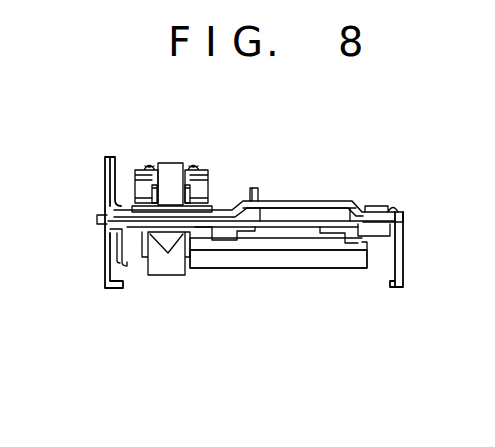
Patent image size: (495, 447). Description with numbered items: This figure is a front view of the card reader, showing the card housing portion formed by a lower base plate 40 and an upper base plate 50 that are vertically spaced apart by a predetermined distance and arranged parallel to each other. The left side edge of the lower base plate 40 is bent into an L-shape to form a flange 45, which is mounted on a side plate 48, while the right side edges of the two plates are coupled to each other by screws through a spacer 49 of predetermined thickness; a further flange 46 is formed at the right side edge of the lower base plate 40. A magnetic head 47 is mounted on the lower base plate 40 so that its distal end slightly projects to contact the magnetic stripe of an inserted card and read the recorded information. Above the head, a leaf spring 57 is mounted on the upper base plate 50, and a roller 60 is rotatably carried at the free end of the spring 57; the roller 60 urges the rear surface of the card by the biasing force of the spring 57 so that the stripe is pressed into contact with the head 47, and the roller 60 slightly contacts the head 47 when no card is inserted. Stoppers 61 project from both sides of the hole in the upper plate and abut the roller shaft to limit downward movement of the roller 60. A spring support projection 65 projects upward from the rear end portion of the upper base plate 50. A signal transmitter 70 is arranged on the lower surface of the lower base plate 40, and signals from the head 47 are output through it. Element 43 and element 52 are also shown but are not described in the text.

The lower base plate 40 is at (298, 228).
The support plate 43 is at (338, 210).
The flange 45 is at (121, 249).
The flange 46 is at (405, 276).
The magnetic head 47 is at (173, 265).
The side plate 48 is at (105, 181).
The spacer 49 is at (405, 218).
The upper base plate 50 is at (313, 200).
The rivet 52 is at (403, 210).
The leaf spring 57 is at (208, 170).
The roller 60 is at (168, 170).
The stoppers 61 is at (135, 203).
The spring support projection 65 is at (258, 187).
The signal transmitter 70 is at (261, 260).